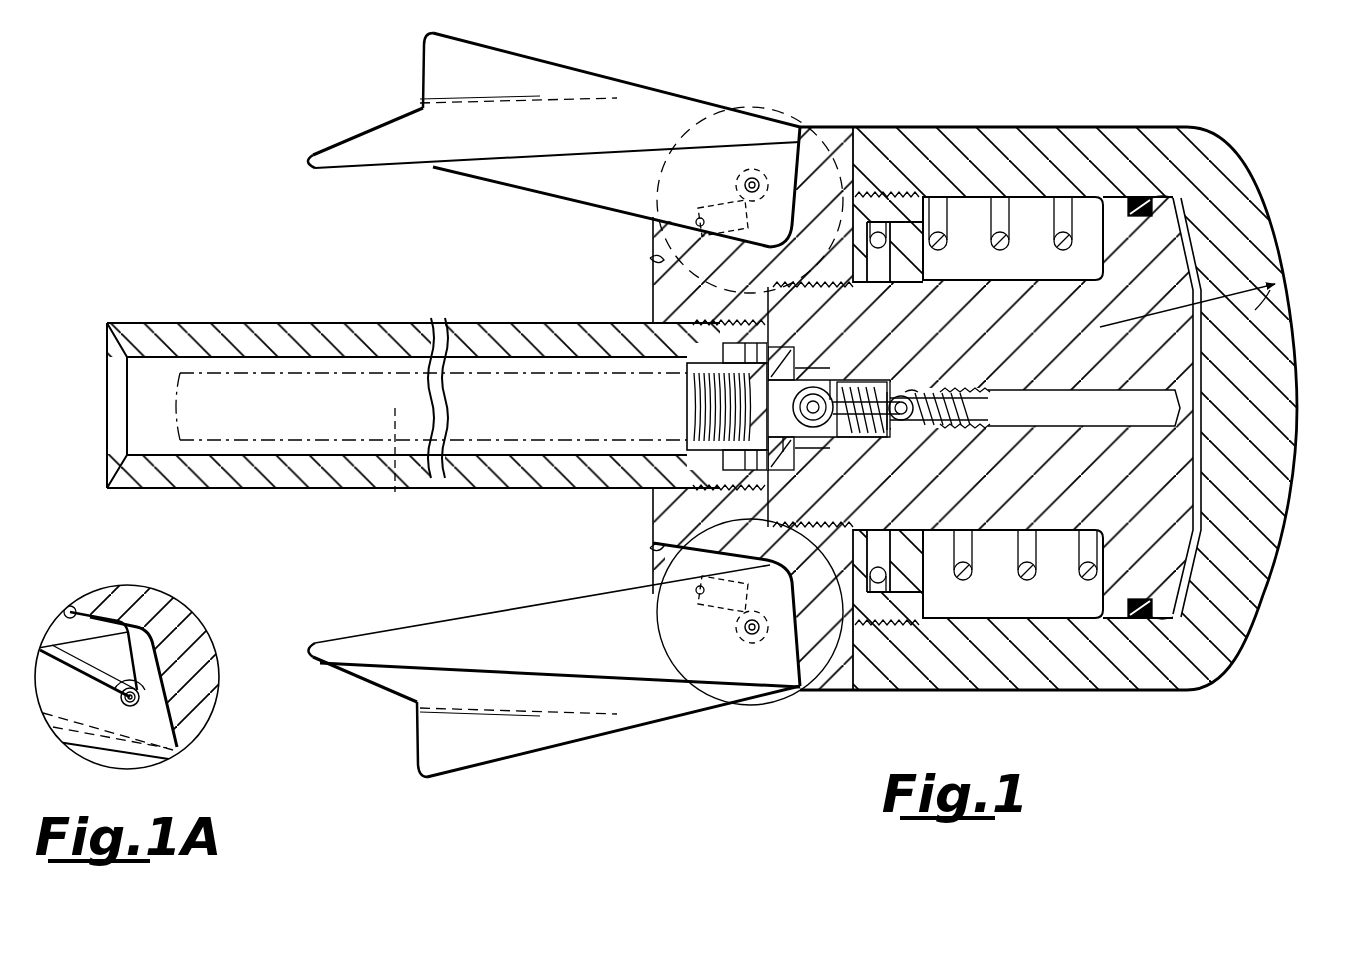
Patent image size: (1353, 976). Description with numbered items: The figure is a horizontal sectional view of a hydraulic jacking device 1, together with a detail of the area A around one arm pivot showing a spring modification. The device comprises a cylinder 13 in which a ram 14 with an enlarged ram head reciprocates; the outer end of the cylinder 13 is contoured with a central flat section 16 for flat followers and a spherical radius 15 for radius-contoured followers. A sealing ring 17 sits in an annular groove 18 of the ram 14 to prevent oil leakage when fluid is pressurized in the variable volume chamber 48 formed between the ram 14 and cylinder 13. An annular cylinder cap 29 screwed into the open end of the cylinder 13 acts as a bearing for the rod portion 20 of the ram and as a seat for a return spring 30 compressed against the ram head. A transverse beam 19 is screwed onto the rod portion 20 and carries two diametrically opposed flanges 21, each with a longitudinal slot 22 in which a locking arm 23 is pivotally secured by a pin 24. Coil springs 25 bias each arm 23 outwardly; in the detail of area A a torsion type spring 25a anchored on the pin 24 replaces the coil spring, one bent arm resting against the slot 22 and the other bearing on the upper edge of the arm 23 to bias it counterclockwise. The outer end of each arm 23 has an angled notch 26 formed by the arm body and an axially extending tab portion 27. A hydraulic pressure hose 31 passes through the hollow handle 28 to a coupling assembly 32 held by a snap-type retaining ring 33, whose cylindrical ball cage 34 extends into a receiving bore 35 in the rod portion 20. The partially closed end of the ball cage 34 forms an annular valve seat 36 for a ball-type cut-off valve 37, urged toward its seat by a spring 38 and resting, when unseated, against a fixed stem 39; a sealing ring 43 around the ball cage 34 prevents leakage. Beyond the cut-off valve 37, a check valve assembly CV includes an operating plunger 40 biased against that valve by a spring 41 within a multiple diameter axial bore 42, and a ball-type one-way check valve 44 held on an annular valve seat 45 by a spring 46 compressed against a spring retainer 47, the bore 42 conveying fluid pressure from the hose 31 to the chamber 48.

In FIG. 1, the hydraulic jacking device 1 is at (958, 126).
In FIG. 1, the cylinder 13 is at (1253, 551).
In FIG. 1, the ram 14 is at (1133, 250).
In FIG. 1, the spherical radius 15 is at (1278, 300).
In FIG. 1, the central flat section 16 is at (1295, 403).
In FIG. 1, the sealing ring 17 is at (1128, 206).
In FIG. 1, the annular groove 18 is at (1155, 205).
In FIG. 1, the transverse beam 19 is at (818, 153).
In FIG. 1, the rod portion 20 is at (1055, 490).
In FIG. 1, the flanges 21 is at (712, 172).
In FIG. 1, the longitudinal slot 22 is at (666, 266).
In FIG. 1A, the longitudinal slot 22 is at (70, 609).
In FIG. 1, the locking arm 23 is at (564, 83).
In FIG. 1A, the locking arm 23 is at (153, 720).
In FIG. 1, the pin 24 is at (755, 180).
In FIG. 1A, the pin 24 is at (136, 697).
In FIG. 1, the coil spring 25 is at (706, 240).
In FIG. 1A, the torsion type spring 25a is at (145, 637).
In FIG. 1, the angled notch 26 is at (424, 112).
In FIG. 1, the tab portion 27 is at (346, 157).
In FIG. 1, the hollow handle 28 is at (300, 332).
In FIG. 1, the annular cylinder cap 29 is at (874, 188).
In FIG. 1, the return spring 30 is at (1003, 242).
In FIG. 1, the hydraulic pressure hose 31 is at (393, 493).
In FIG. 1, the coupling assembly 32 is at (686, 390).
In FIG. 1, the snap-type retaining ring 33 is at (746, 334).
In FIG. 1, the cylindrical ball cage 34 is at (799, 385).
In FIG. 1, the receiving bore 35 is at (829, 392).
In FIG. 1, the annular valve seat 36 is at (817, 430).
In FIG. 1, the ball-type cut-off valve 37 is at (806, 416).
In FIG. 1, the spring 38 is at (786, 380).
In FIG. 1, the fixed stem 39 is at (745, 404).
In FIG. 1, the operating plunger 40 is at (852, 432).
In FIG. 1, the spring 41 is at (873, 388).
In FIG. 1, the multiple diameter axial bore 42 is at (873, 432).
In FIG. 1, the sealing ring 43 is at (801, 440).
In FIG. 1, the ball-type one-way check valve 44 is at (904, 421).
In FIG. 1, the annular valve seat 45 is at (902, 398).
In FIG. 1, the spring 46 is at (940, 426).
In FIG. 1, the spring retainer 47 is at (966, 399).
In FIG. 1, the variable volume chamber 48 is at (1200, 493).
In FIG. 1, the check valve assembly CV is at (933, 392).
In FIG. 1, the area A is at (657, 645).
In FIG. 1A, the area A is at (175, 598).